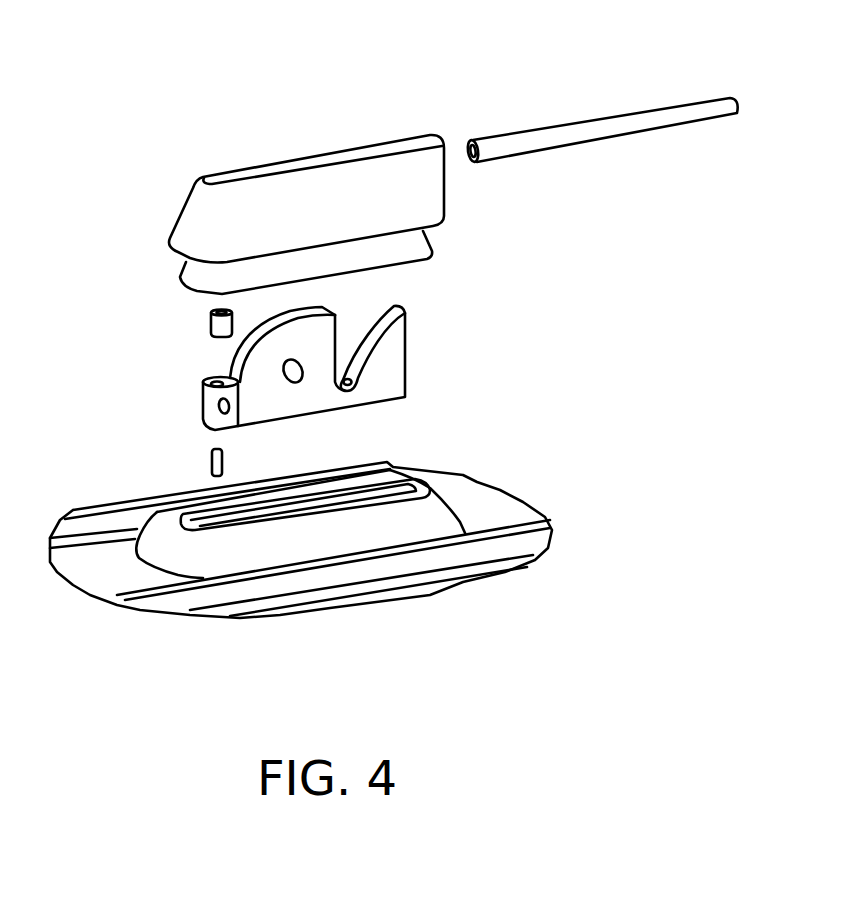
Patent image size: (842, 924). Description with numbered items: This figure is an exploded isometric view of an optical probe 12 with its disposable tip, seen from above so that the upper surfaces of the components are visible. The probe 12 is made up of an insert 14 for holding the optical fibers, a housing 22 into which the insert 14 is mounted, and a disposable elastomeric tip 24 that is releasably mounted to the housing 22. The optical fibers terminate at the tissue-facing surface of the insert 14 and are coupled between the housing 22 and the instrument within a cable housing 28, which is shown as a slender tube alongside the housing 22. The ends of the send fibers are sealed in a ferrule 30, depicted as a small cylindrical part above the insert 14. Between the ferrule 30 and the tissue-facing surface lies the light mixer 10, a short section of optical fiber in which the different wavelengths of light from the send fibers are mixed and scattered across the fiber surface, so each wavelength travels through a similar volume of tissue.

The optical probe 12 is at (347, 124).
The housing 22 is at (284, 169).
The cable housing 28 is at (570, 145).
The ferrule 30 is at (211, 320).
The insert 14 is at (397, 372).
The light mixer 10 is at (211, 458).
The disposable elastomeric tip 24 is at (497, 500).